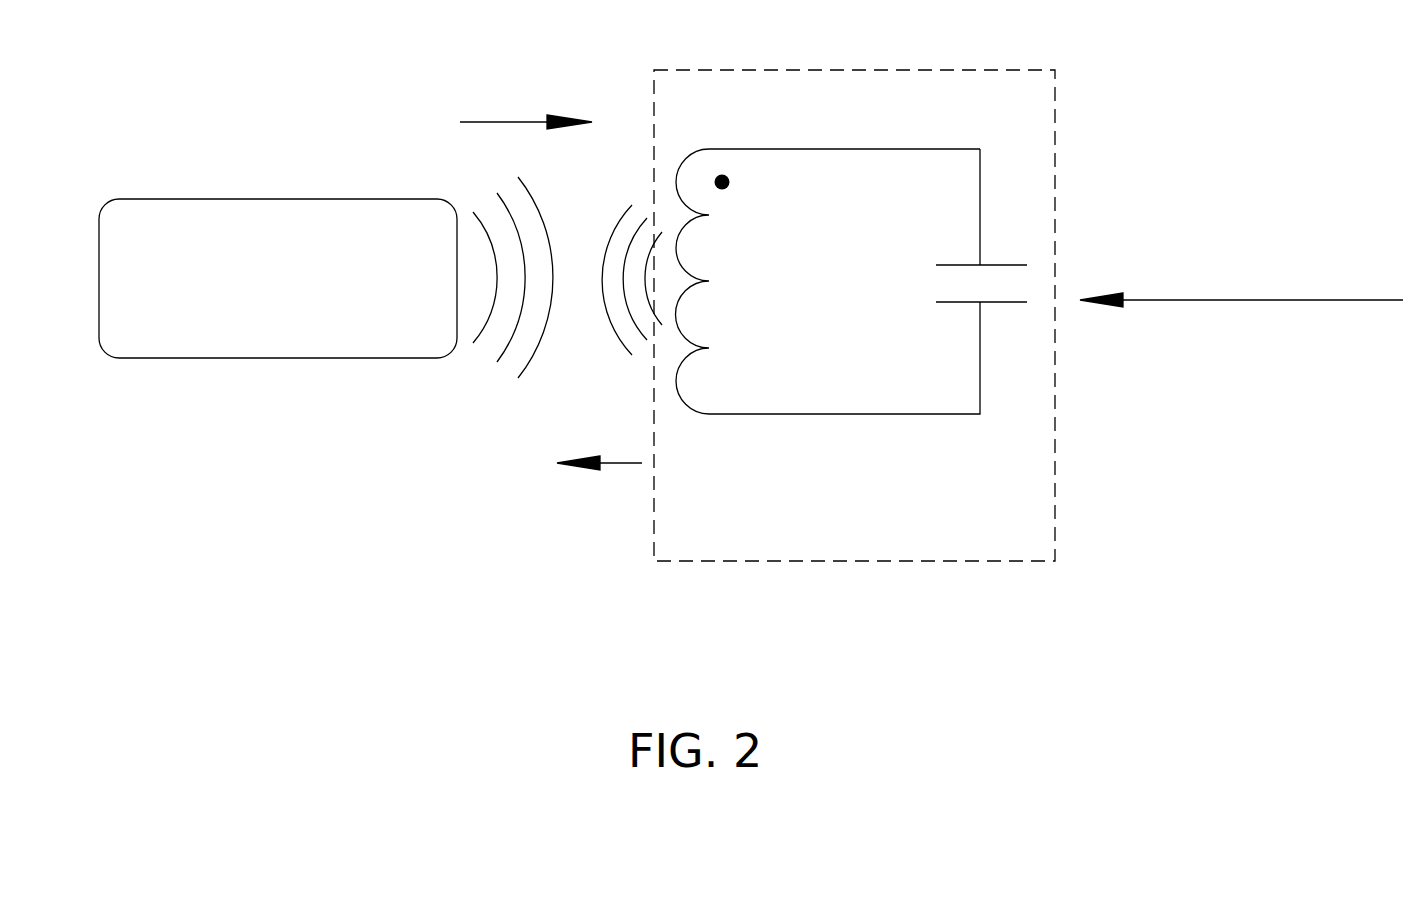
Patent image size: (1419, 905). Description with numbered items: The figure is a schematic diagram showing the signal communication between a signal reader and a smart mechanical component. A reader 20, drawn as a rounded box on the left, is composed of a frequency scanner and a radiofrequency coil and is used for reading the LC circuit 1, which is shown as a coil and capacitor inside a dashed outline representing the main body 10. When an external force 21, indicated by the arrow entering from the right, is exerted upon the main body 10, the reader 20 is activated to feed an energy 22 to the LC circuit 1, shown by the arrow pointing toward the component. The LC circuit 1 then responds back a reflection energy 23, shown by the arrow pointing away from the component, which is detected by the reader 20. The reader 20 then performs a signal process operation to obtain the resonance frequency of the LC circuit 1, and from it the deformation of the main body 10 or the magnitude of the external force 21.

The LC circuit 1 is at (909, 294).
The main body 10 is at (1055, 492).
The reader 20 is at (275, 199).
The external force 21 is at (1245, 300).
The energy 22 is at (508, 122).
The reflection energy 23 is at (616, 462).